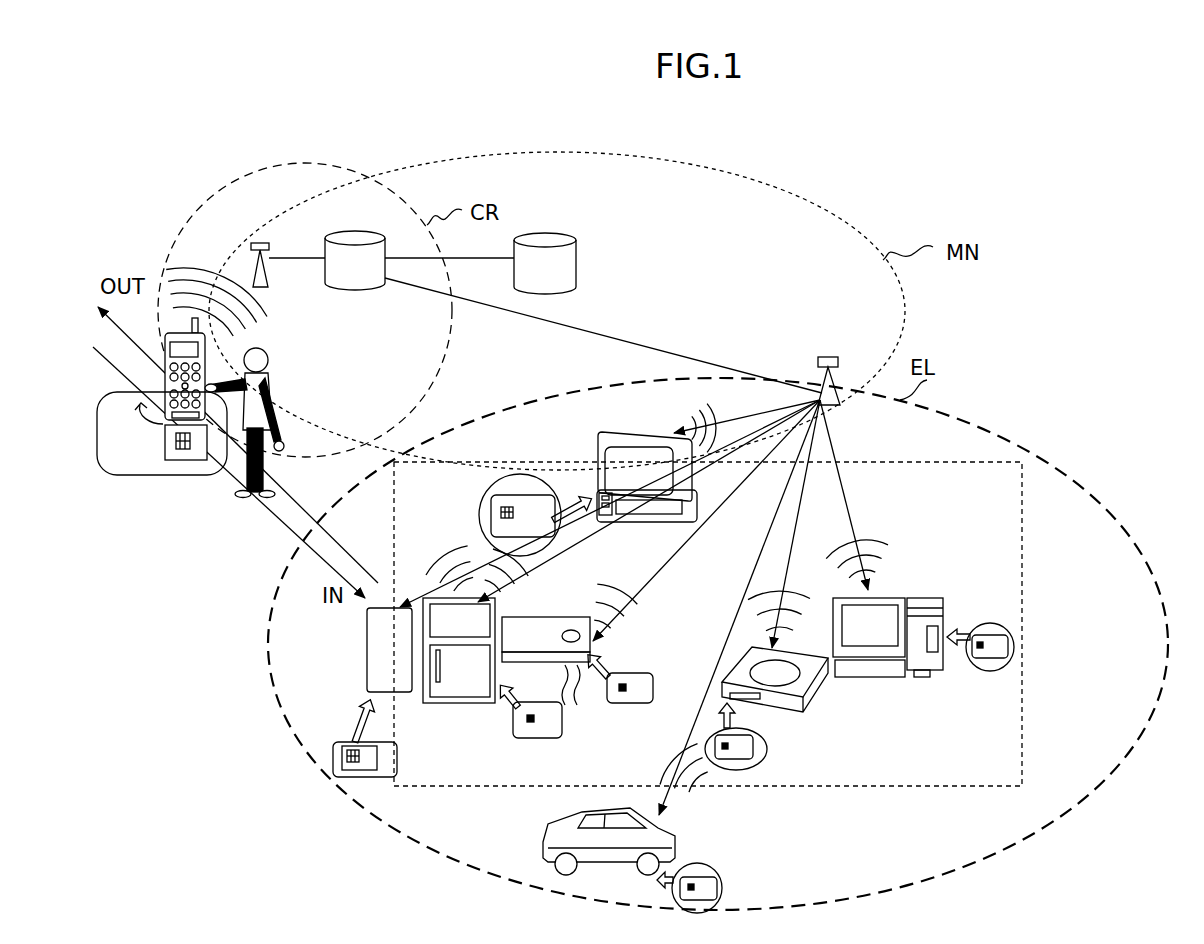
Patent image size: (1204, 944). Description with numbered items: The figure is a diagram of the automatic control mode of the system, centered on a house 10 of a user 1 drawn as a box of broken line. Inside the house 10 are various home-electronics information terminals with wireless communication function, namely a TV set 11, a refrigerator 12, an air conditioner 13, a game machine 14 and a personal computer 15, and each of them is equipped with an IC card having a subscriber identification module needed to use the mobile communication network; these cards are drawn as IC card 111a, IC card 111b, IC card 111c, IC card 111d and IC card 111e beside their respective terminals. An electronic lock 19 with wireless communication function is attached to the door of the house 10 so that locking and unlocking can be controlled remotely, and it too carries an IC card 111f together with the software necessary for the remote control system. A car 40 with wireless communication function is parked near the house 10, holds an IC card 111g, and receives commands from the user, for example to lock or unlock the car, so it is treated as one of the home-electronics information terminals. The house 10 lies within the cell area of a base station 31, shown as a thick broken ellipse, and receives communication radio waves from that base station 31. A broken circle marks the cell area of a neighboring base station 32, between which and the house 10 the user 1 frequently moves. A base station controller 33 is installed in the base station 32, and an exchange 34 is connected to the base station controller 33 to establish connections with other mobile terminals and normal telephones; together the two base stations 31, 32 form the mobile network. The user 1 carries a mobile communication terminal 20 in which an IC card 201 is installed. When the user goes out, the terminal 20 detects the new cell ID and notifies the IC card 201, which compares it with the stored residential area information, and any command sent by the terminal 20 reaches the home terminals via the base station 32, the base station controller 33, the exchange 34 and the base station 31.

The user 1 is at (272, 389).
The house 10 is at (888, 787).
The TV set 11 is at (700, 500).
The refrigerator 12 is at (422, 700).
The air conditioner 13 is at (553, 617).
The game machine 14 is at (776, 707).
The personal computer 15 is at (840, 683).
The electronic lock 19 is at (367, 650).
The mobile communication terminal 20 is at (162, 448).
The IC card 201 is at (167, 447).
The base station 31 is at (837, 405).
The base station 32 is at (267, 285).
The base station controller 33 is at (357, 231).
The exchange 34 is at (545, 263).
The car 40 is at (682, 852).
The IC card 111a is at (490, 497).
The IC card 111b is at (560, 715).
The IC card 111c is at (630, 667).
The IC card 111d is at (720, 773).
The IC card 111e is at (987, 623).
The IC card 111f is at (366, 778).
The IC card 111g is at (723, 885).